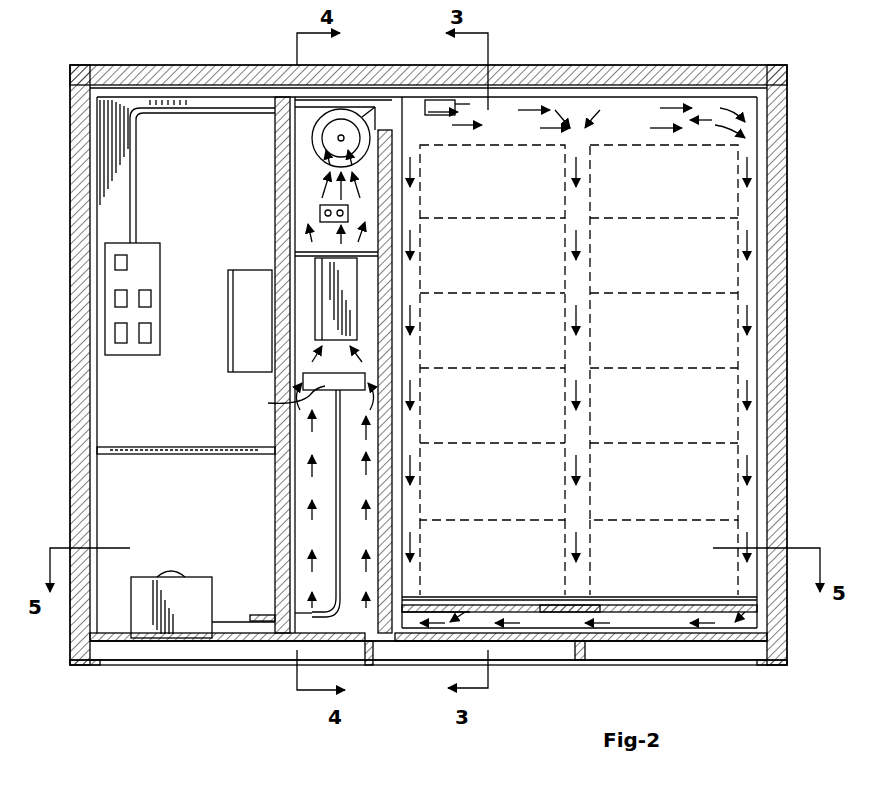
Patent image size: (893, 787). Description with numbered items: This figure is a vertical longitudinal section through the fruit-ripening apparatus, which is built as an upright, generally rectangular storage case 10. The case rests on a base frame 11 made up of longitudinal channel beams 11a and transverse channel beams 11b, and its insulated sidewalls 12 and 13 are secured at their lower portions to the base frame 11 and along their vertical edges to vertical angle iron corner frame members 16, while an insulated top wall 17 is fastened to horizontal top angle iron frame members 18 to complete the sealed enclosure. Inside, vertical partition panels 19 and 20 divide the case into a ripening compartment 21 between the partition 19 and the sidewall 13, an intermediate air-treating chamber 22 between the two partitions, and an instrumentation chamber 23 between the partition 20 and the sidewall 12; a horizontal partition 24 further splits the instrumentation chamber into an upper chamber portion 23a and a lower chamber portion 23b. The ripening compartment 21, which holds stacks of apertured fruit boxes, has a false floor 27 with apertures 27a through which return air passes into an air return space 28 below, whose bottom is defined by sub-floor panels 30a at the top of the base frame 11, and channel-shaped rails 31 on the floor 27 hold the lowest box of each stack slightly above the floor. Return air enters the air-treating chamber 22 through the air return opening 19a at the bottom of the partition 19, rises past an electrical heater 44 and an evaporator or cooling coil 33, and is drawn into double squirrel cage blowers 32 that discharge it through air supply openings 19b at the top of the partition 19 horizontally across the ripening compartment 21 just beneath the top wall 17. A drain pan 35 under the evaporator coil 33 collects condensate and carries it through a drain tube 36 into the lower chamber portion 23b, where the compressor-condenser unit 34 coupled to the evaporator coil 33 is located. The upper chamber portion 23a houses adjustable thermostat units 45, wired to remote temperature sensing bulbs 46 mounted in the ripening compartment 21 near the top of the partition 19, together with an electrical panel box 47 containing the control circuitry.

The storage case 10 is at (668, 65).
The base frame 11 is at (228, 663).
The longitudinal channel beams 11a is at (527, 665).
The transverse channel beams 11b is at (92, 665).
The sidewall 12 is at (70, 352).
The sidewall 13 is at (787, 362).
The vertical angle iron corner frame members 16 is at (100, 490).
The top wall 17 is at (160, 65).
The horizontal top angle iron frame members 18 is at (190, 97).
The vertical partition panel 19 is at (392, 470).
The air return opening 19a is at (372, 645).
The air supply openings 19b is at (383, 118).
The vertical partition panel 20 is at (275, 490).
The ripening compartment 21 is at (530, 273).
The air-treating chamber 22 is at (350, 369).
The instrumentation chamber 23 is at (180, 406).
The upper chamber portion 23a is at (212, 174).
The lower chamber portion 23b is at (182, 519).
The horizontal partition 24 is at (180, 447).
The false bottom or floor 27 is at (608, 605).
The apertures 27a is at (558, 605).
The air return space 28 is at (490, 610).
The sub-floor panels 30a is at (662, 660).
The channel-shaped rails 31 is at (712, 600).
The double squirrel cage blowers 32 is at (337, 112).
The evaporator or cooling coil 33 is at (315, 262).
The compressor-condenser unit 34 is at (143, 578).
The drain pan 35 is at (277, 399).
The drain tube 36 is at (342, 510).
The electrical heater 44 is at (320, 213).
The adjustable thermostat units 45 is at (160, 262).
The remote temperature sensing bulbs 46 is at (448, 115).
The electrical panel box 47 is at (238, 323).